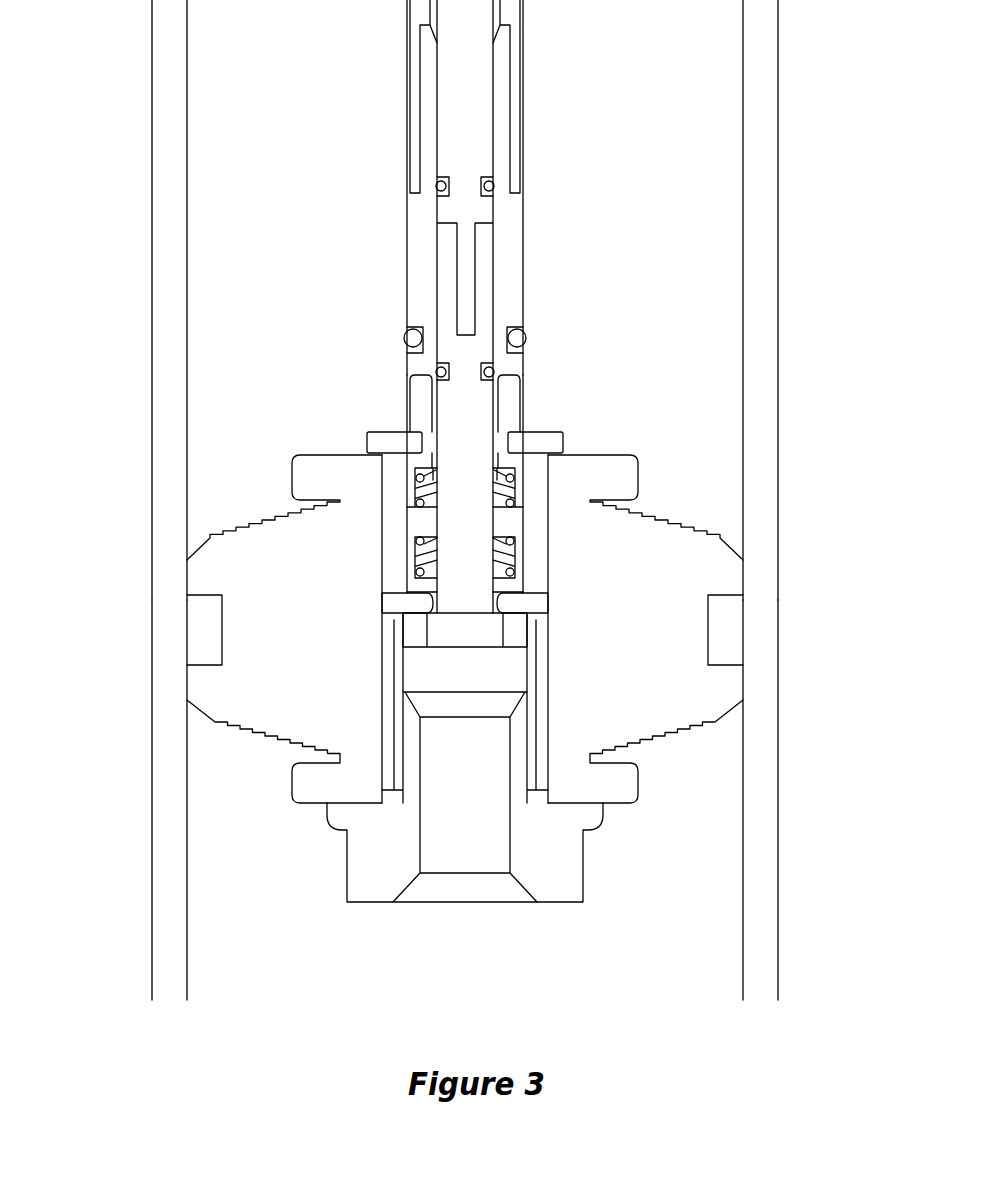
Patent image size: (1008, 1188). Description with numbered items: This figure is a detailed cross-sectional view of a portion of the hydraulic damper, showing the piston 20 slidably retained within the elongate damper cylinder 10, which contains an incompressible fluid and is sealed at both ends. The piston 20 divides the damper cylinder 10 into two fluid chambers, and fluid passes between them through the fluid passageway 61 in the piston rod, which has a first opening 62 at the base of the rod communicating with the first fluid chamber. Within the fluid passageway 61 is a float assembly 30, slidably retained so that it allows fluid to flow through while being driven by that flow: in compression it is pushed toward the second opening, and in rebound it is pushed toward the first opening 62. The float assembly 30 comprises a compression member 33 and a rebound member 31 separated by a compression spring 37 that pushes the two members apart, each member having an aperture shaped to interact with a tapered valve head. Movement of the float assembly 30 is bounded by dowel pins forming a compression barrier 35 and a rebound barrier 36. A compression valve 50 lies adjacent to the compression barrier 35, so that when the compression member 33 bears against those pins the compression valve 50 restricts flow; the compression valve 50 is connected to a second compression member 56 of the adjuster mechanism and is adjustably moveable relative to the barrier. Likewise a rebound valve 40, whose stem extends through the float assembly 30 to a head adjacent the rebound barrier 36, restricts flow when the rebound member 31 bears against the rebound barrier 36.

The damper cylinder 10 is at (760, 213).
The piston 20 is at (247, 705).
The float assembly 30 is at (546, 520).
The rebound member 31 is at (520, 560).
The compression member 33 is at (520, 482).
The compression barrier dowel pins 35 is at (367, 438).
The rebound barrier dowel pins 36 is at (400, 602).
The compression spring 37 is at (415, 535).
The rebound valve 40 is at (760, 772).
The compression valve 50 is at (495, 440).
The second compression member 56 is at (395, 0).
The fluid passageway 61 is at (421, 520).
The first opening 62 is at (460, 835).